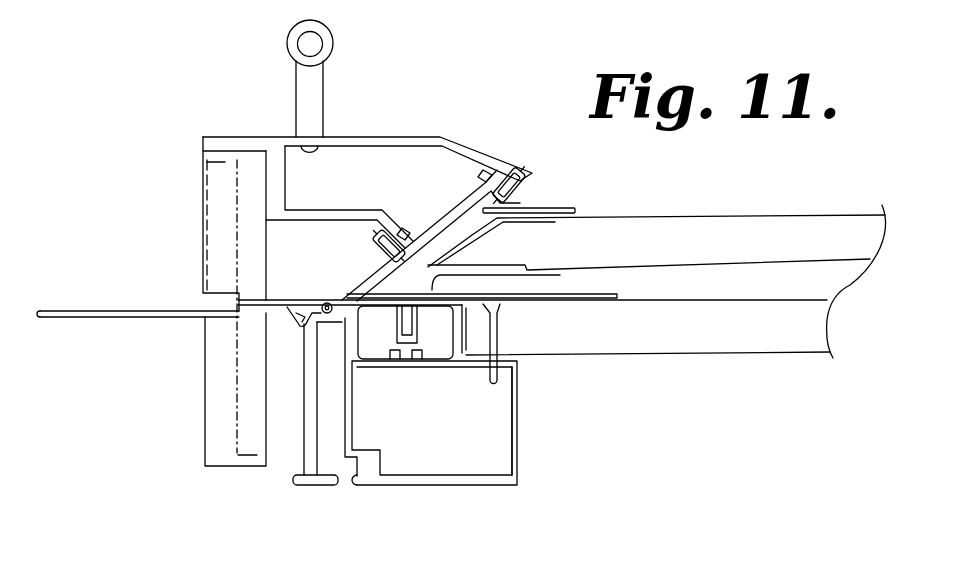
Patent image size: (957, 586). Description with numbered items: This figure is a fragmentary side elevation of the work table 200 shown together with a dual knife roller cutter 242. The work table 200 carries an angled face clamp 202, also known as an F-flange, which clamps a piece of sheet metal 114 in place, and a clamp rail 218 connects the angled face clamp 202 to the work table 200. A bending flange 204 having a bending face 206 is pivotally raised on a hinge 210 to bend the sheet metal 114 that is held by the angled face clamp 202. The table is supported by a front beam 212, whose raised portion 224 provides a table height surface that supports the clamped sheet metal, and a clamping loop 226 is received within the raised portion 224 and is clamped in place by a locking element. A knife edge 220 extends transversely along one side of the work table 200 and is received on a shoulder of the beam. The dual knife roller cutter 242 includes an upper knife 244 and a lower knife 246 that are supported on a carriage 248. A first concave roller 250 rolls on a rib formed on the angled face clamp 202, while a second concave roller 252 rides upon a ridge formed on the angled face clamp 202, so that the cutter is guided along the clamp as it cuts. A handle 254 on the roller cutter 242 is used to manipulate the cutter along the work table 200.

The handle 254 is at (302, 73).
The carriage 248 is at (237, 137).
The dual knife roller cutter 242 is at (415, 136).
The first concave roller 250 is at (522, 190).
The second concave roller 252 is at (380, 240).
The angled face clamp 202 is at (447, 248).
The clamp rail 218 is at (727, 232).
The sheet metal 114 is at (563, 293).
The knife edge 220 is at (780, 333).
The work table 200 is at (688, 350).
The upper knife 244 is at (218, 273).
The lower knife 246 is at (267, 427).
The bending face 206 is at (300, 321).
The hinge 210 is at (327, 303).
The bending flange 204 is at (320, 486).
The front beam 212 is at (433, 483).
The raised portion 224 is at (447, 317).
The clamping loop 226 is at (397, 322).